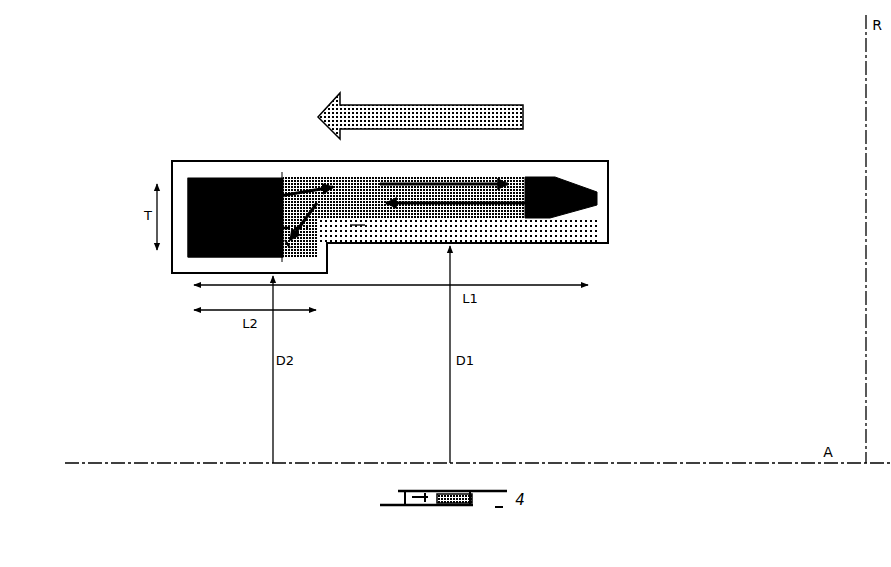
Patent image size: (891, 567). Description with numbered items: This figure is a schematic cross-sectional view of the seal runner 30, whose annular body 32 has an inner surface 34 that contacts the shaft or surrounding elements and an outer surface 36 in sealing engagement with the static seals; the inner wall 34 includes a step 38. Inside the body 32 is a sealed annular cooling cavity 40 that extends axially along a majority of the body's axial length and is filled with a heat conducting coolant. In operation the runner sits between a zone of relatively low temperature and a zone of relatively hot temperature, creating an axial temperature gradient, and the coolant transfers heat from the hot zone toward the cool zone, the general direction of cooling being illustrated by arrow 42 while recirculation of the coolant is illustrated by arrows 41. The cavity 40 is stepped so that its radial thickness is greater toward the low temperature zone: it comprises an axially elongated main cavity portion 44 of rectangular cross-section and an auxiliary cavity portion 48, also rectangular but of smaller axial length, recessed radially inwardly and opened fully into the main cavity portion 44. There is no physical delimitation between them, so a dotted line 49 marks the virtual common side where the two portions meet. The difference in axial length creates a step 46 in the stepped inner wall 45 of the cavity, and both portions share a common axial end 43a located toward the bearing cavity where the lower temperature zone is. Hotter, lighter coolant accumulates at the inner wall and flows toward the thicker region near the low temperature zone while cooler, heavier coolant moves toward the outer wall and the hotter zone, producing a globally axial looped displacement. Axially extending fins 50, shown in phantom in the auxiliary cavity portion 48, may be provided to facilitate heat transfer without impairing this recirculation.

The seal runner 30 is at (178, 138).
The annular body 32 is at (170, 172).
The inner surface 34 is at (532, 243).
The outer surface 36 is at (522, 160).
The step 38 is at (331, 248).
The cooling cavity 40 is at (312, 178).
The arrows 41 is at (560, 218).
The arrow 42 is at (402, 110).
The common axial end 43a is at (187, 218).
The main cavity portion 44 is at (223, 180).
The inner wall 45 is at (358, 225).
The step 46 is at (320, 223).
The auxiliary cavity portion 48 is at (200, 257).
The dotted line 49 is at (190, 252).
The axially extending fins 50 is at (238, 257).